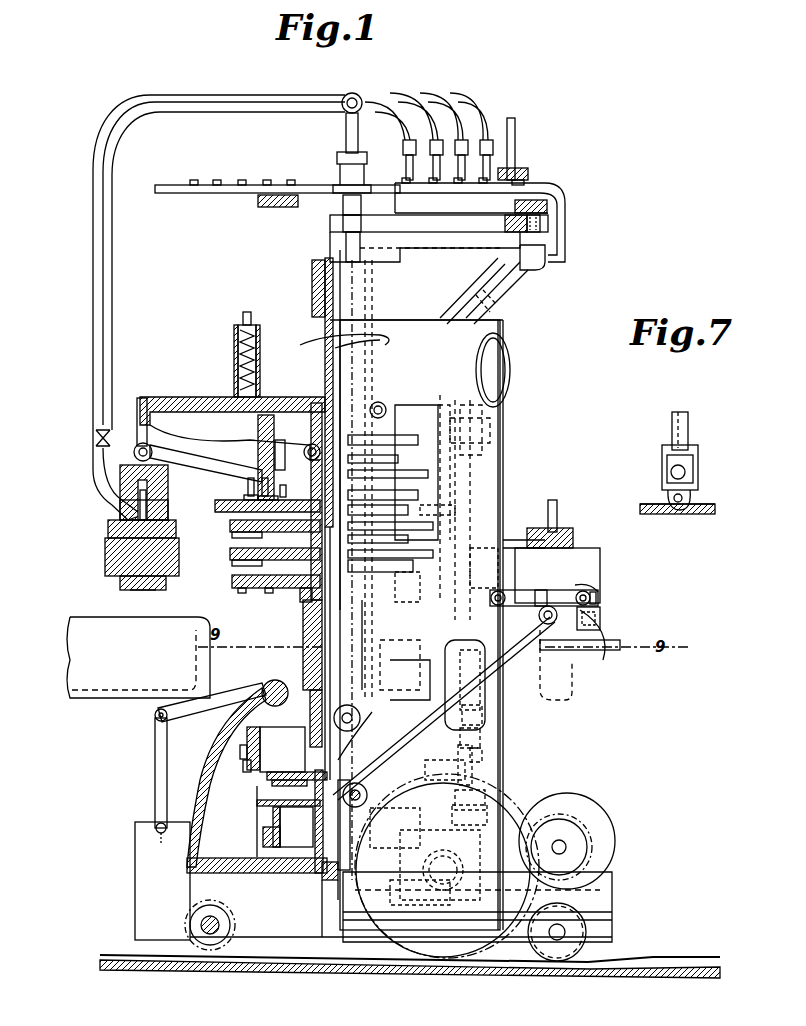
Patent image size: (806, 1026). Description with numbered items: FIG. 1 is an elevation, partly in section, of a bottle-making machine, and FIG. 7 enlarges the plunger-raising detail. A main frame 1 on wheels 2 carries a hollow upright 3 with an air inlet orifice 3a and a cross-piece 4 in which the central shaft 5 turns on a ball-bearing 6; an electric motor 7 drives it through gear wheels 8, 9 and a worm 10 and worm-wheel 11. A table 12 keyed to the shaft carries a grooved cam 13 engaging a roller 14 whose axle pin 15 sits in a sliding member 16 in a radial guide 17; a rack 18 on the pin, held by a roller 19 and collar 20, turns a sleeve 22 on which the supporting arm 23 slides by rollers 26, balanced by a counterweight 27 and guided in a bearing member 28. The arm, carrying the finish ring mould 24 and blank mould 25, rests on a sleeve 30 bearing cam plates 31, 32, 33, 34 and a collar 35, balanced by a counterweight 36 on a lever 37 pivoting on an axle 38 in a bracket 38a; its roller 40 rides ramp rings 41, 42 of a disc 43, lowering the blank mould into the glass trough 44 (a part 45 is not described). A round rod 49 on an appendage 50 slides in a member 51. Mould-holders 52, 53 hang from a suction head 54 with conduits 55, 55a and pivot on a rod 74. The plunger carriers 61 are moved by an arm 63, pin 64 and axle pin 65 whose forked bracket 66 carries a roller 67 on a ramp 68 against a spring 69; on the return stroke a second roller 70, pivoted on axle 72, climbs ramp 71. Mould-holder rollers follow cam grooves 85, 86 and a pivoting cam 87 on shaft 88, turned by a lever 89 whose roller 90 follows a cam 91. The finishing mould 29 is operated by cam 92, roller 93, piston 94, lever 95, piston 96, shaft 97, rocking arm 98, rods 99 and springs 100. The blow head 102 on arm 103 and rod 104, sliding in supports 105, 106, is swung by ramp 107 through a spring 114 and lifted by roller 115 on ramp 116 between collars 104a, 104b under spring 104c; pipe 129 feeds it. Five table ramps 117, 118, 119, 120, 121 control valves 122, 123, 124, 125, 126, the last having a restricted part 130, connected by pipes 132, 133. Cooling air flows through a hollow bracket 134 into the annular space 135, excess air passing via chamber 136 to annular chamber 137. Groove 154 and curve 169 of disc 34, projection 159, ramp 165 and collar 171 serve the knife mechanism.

In FIG. 1, the main frame 1 is at (345, 925).
In FIG. 1, the wheels 2 is at (572, 942).
In FIG. 1, the supporting upright 3 is at (505, 484).
In FIG. 1, the orifice 3a is at (500, 370).
In FIG. 1, the cross-piece 4 is at (497, 284).
In FIG. 1, the central vertical shaft 5 is at (324, 374).
In FIG. 1, the ball-bearing 6 is at (332, 880).
In FIG. 1, the electric motor 7 is at (615, 838).
In FIG. 1, the gear wheel 8 is at (574, 818).
In FIG. 1, the gear wheel 9 is at (512, 824).
In FIG. 1, the worm 10 is at (455, 890).
In FIG. 1, the worm-wheel 11 is at (262, 885).
In FIG. 1, the horizontal table 12 is at (180, 195).
In FIG. 1, the grooved cam 13 is at (262, 200).
In FIG. 1, the roller 14 is at (548, 222).
In FIG. 1, the axle pin 15 is at (548, 234).
In FIG. 1, the sliding member 16 is at (548, 258).
In FIG. 1, the radial guide 17 is at (527, 262).
In FIG. 1, the rack 18 is at (434, 236).
In FIG. 1, the roller 19 is at (362, 222).
In FIG. 1, the collar 20 is at (356, 245).
In FIG. 1, the sleeve 22 is at (320, 348).
In FIG. 1, the horizontal supporting arm 23 is at (176, 396).
In FIG. 1, the finish ring mould 24 is at (150, 530).
In FIG. 1, the blank mould 25 is at (126, 572).
In FIG. 1, the rollers 26 is at (382, 404).
In FIG. 1, the counterweight 27 is at (425, 412).
In FIG. 1, the bearing member 28 is at (312, 282).
In FIG. 1, the finishing mould 29 is at (600, 612).
In FIG. 1, the sleeve 30 is at (310, 630).
In FIG. 1, the cam plate 31 is at (240, 502).
In FIG. 1, the cam plate 32 is at (230, 526).
In FIG. 1, the cam plate 33 is at (230, 555).
In FIG. 1, the cam plate 34 is at (238, 588).
In FIG. 1, the collar 35 is at (304, 656).
In FIG. 1, the counterweight 36 is at (145, 870).
In FIG. 1, the lever 37 is at (196, 708).
In FIG. 1, the stationary axle 38 is at (270, 683).
In FIG. 1, the bracket 38a is at (194, 803).
In FIG. 1, the supporting roller 40 is at (358, 712).
In FIG. 1, the concentric ring 41 is at (278, 730).
In FIG. 1, the concentric ring 42 is at (255, 728).
In FIG. 1, the disc 43 is at (270, 778).
In FIG. 1, the trough 44 is at (110, 705).
In FIG. 1, the pin 45 is at (247, 752).
In FIG. 1, the round rod 49 is at (412, 655).
In FIG. 1, the appendage 50 is at (418, 668).
In FIG. 1, the member 51 is at (438, 600).
In FIG. 1, the mould-holder 52 is at (108, 528).
In FIG. 1, the mould-holder 53 is at (106, 560).
In FIG. 1, the suction head 54 is at (160, 504).
In FIG. 1, the conduit 55 is at (116, 458).
In FIG. 1, the conduit 55a is at (104, 492).
In FIG. 1, the plunger carriers 61 is at (162, 486).
In FIG. 1, the arm 63 is at (218, 442).
In FIG. 1, the pin 64 is at (152, 450).
In FIG. 1, the vertical axle pin 65 is at (272, 440).
In FIG. 1, the forked bracket 66 is at (248, 488).
In FIG. 7, the forked bracket 66 is at (698, 475).
In FIG. 1, the roller 67 is at (262, 502).
In FIG. 1, the circular ramp 68 is at (246, 500).
In FIG. 1, the spring 69 is at (246, 362).
In FIG. 1, the second roller 70 is at (270, 485).
In FIG. 7, the second roller 70 is at (685, 495).
In FIG. 1, the second ramp 71 is at (270, 495).
In FIG. 7, the second ramp 71 is at (665, 497).
In FIG. 1, the axle 72 is at (280, 462).
In FIG. 7, the axle 72 is at (672, 472).
In FIG. 1, the vertical rod 74 is at (136, 412).
In FIG. 1, the cam groove 85 is at (240, 538).
In FIG. 1, the cam groove 86 is at (240, 566).
In FIG. 1, the cam 87 is at (432, 518).
In FIG. 1, the vertical shaft 88 is at (482, 512).
In FIG. 1, the lever 89 is at (478, 795).
In FIG. 1, the roller 90 is at (396, 812).
In FIG. 1, the cam 91 is at (262, 800).
In FIG. 1, the cam 92 is at (283, 806).
In FIG. 1, the roller 93 is at (342, 800).
In FIG. 1, the piston 94 is at (360, 800).
In FIG. 1, the pivoting lever 95 is at (425, 740).
In FIG. 1, the piston 96 is at (547, 626).
In FIG. 1, the driving shaft 97 is at (550, 598).
In FIG. 1, the rocking arm 98 is at (598, 596).
In FIG. 1, the rods 99 is at (490, 598).
In FIG. 1, the springs 100 is at (598, 590).
In FIG. 1, the blow head 102 is at (570, 534).
In FIG. 1, the arm 103 is at (506, 545).
In FIG. 1, the vertical rod 104 is at (478, 570).
In FIG. 1, the ring 104a is at (480, 735).
In FIG. 1, the ring 104b is at (484, 775).
In FIG. 1, the spring 104c is at (482, 715).
In FIG. 1, the support 105 is at (492, 426).
In FIG. 1, the support 106 is at (490, 812).
In FIG. 1, the ramp 107 is at (298, 845).
In FIG. 1, the spring 114 is at (476, 780).
In FIG. 1, the roller 115 is at (440, 768).
In FIG. 1, the ramp 116 is at (246, 768).
In FIG. 1, the ramp 117 is at (409, 196).
In FIG. 1, the ramp 118 is at (433, 196).
In FIG. 1, the ramp 119 is at (460, 196).
In FIG. 1, the ramp 120 is at (488, 196).
In FIG. 1, the ramp 121 is at (523, 182).
In FIG. 1, the valve 122 is at (410, 145).
In FIG. 1, the valve 123 is at (437, 145).
In FIG. 1, the valve 124 is at (463, 148).
In FIG. 1, the valve 125 is at (490, 152).
In FIG. 1, the valve 126 is at (516, 140).
In FIG. 1, the pipe 129 is at (558, 516).
In FIG. 1, the restricted cylindrical part 130 is at (520, 170).
In FIG. 1, the common pipe 132 is at (226, 95).
In FIG. 1, the pipe 133 is at (213, 112).
In FIG. 1, the hollow bracket 134 is at (527, 680).
In FIG. 1, the annular space 135 is at (603, 656).
In FIG. 1, the chamber 136 is at (410, 915).
In FIG. 1, the annular chamber 137 is at (272, 840).
In FIG. 1, the groove 154 is at (268, 590).
In FIG. 1, the projection 159 is at (410, 600).
In FIG. 7, the ramp 165 is at (678, 428).
In FIG. 1, the curve 169 is at (243, 590).
In FIG. 1, the collar 171 is at (300, 600).